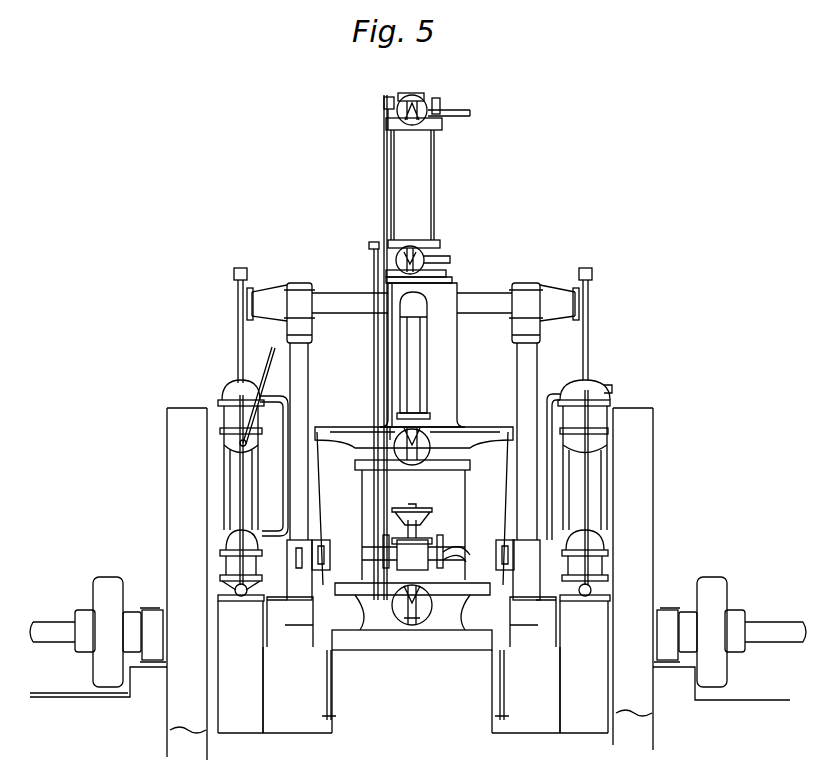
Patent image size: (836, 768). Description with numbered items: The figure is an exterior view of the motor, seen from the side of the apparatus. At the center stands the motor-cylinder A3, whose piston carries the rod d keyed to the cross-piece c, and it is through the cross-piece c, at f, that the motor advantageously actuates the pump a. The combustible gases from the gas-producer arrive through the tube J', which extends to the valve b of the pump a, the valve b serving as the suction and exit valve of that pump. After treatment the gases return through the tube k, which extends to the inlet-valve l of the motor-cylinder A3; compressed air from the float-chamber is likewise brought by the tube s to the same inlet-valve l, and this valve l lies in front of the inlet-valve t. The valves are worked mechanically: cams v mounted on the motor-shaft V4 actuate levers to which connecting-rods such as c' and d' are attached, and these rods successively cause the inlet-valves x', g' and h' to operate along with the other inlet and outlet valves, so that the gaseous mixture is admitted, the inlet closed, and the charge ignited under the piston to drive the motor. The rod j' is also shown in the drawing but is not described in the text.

The motor-cylinder A3 is at (410, 584).
The motor-shaft V4 is at (418, 638).
The inlet-valve h' is at (413, 106).
The connecting-rod c' is at (401, 347).
The inlet-valve g' is at (406, 419).
The piston-rod d is at (422, 355).
The connecting-rod d' is at (371, 396).
The cross-piece c is at (413, 313).
The pump-actuating connection f is at (413, 325).
The cam v is at (411, 495).
The inlet-valve x' is at (414, 506).
The inlet-valve l is at (413, 537).
The tube s is at (456, 547).
The inlet-valve t is at (411, 658).
The valve b is at (222, 395).
The pump a is at (415, 487).
The piston rod j' is at (414, 487).
The tube J' is at (259, 389).
The tube k is at (410, 563).